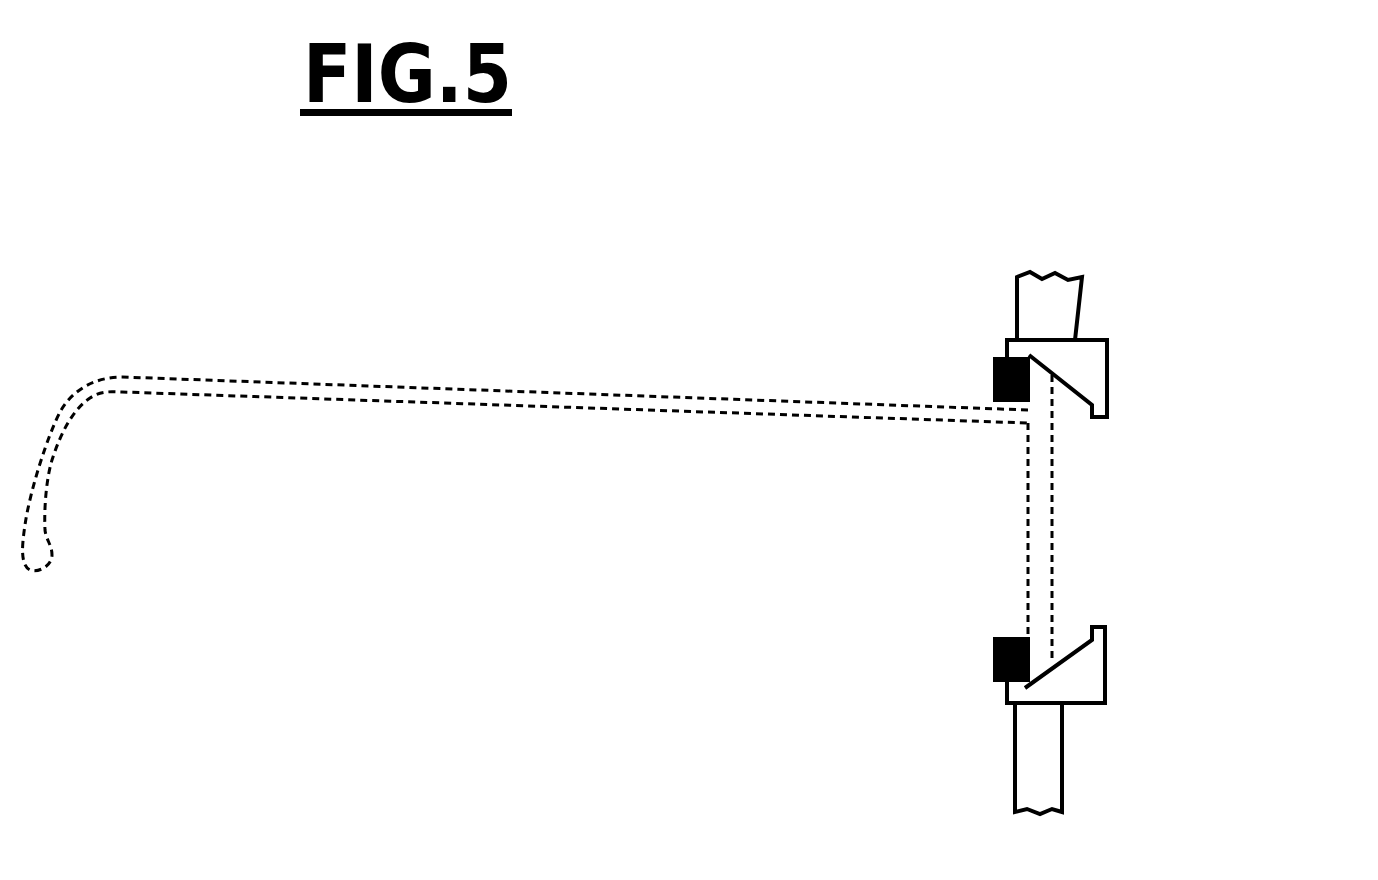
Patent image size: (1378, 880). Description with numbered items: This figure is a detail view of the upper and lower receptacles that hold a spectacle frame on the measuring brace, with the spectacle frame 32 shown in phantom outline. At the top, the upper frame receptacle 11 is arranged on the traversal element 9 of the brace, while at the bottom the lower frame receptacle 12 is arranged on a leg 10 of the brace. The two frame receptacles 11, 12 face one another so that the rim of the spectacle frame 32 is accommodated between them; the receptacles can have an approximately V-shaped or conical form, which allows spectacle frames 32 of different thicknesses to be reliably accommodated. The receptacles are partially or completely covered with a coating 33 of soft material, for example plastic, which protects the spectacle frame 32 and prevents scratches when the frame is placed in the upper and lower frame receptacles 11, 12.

The traversal element 9 is at (1053, 300).
The upper frame receptacle 11 is at (1082, 377).
The coating 33 is at (1000, 365).
The lower frame receptacle 12 is at (1087, 683).
The leg 10 is at (1040, 775).
The spectacle frame 32 is at (353, 392).